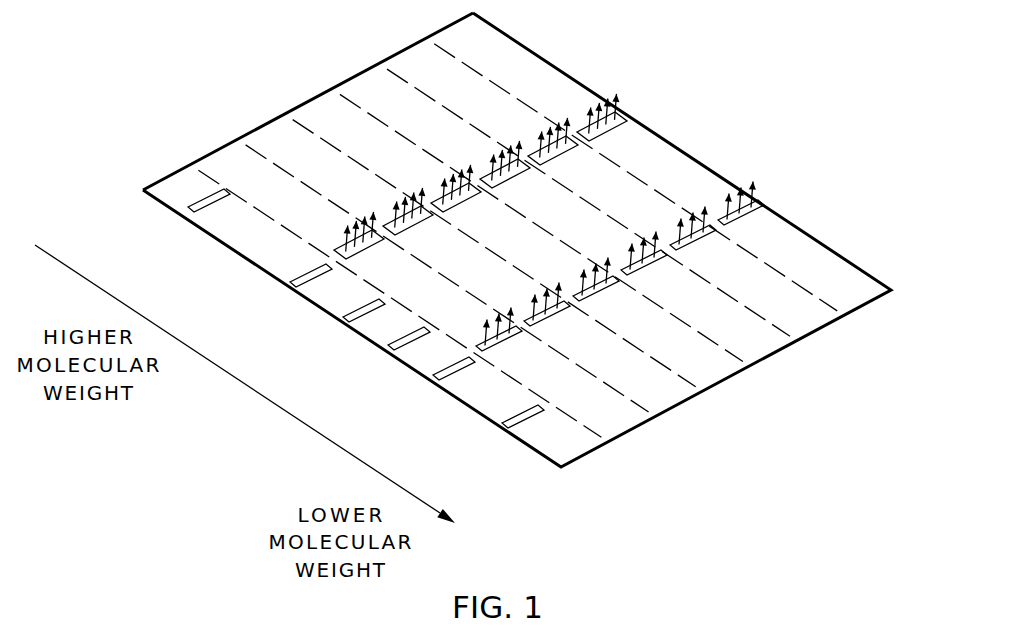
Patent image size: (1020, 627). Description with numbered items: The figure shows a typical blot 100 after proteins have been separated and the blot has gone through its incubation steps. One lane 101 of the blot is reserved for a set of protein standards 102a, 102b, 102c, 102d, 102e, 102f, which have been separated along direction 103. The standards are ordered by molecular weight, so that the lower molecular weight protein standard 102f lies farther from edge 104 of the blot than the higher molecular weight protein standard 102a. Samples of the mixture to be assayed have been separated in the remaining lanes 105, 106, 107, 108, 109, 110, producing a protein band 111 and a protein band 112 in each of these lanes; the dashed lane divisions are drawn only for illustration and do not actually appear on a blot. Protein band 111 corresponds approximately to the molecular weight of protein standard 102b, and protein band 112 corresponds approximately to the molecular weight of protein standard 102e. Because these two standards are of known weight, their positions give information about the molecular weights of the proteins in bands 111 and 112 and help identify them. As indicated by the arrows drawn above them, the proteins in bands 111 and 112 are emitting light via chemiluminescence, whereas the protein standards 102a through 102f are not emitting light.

The blot 100 is at (801, 84).
The lane 101 is at (582, 456).
The protein standard 102a is at (186, 210).
The protein standard 102b is at (289, 284).
The protein standard 102c is at (341, 320).
The protein standard 102d is at (386, 348).
The protein standard 102e is at (431, 378).
The protein standard 102f is at (500, 426).
The direction 103 is at (240, 397).
The edge 104 is at (222, 148).
The lane 105 is at (639, 426).
The lane 106 is at (682, 403).
The lane 107 is at (731, 376).
The lane 108 is at (777, 351).
The lane 109 is at (822, 325).
The lane 110 is at (870, 301).
The protein band 111 is at (620, 111).
The protein band 112 is at (748, 205).